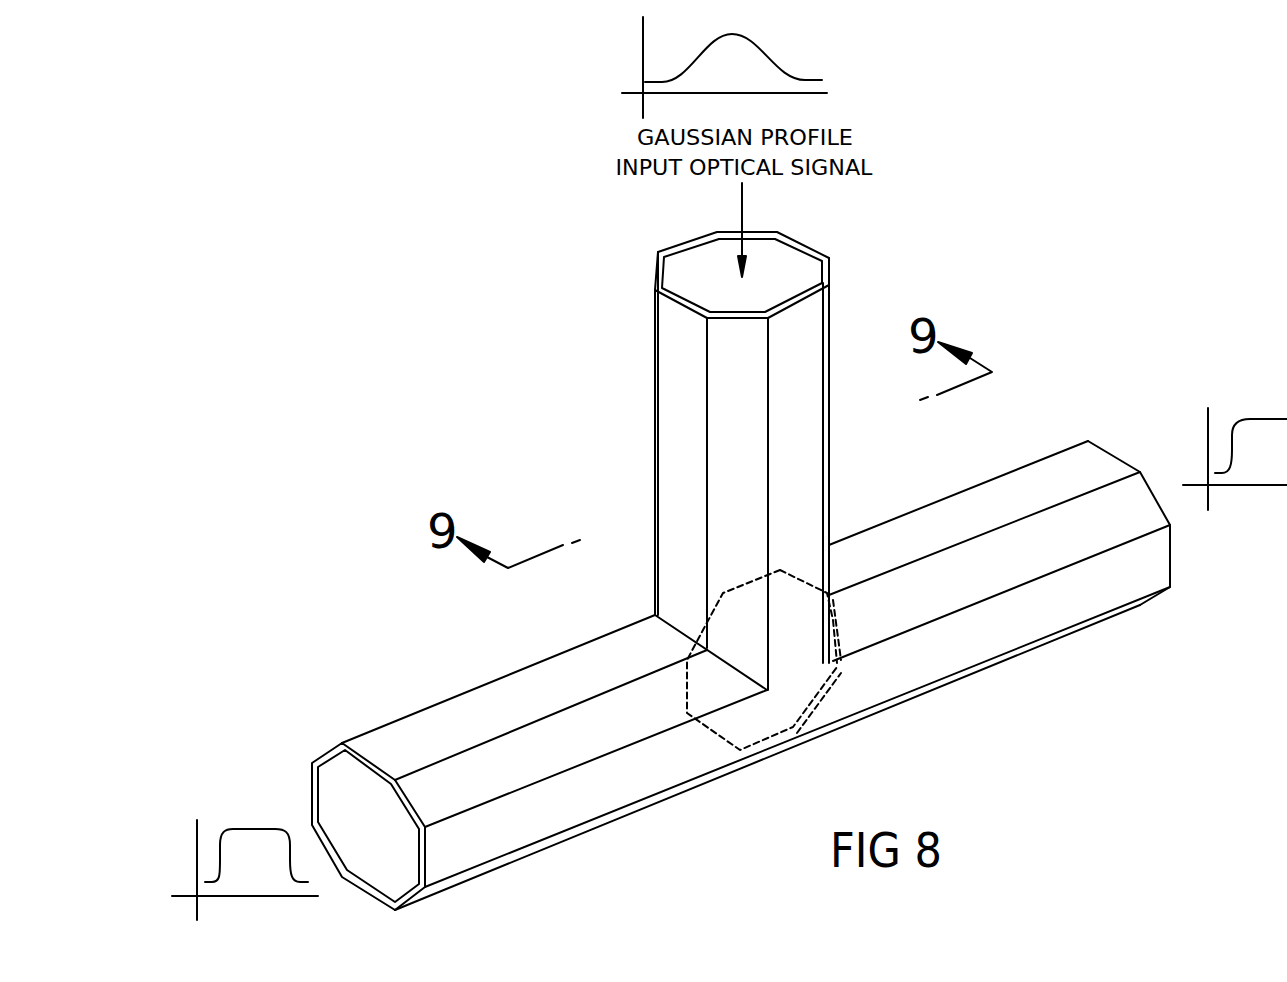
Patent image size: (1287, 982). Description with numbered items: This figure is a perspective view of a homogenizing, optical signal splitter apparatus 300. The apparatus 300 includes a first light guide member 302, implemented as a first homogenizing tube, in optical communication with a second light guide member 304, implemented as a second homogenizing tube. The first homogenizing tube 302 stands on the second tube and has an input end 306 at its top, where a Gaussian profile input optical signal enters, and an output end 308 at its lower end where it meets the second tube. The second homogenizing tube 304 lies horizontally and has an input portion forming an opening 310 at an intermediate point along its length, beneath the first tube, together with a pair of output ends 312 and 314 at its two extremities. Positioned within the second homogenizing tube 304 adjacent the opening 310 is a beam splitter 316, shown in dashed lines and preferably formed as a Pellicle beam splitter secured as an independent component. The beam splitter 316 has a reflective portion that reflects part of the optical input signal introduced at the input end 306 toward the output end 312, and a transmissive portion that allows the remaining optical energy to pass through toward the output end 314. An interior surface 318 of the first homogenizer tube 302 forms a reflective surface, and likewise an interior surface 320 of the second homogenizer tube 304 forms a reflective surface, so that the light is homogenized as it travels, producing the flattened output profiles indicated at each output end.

The homogenizing optical signal splitter apparatus 300 is at (493, 360).
The first light guide member 302 is at (655, 472).
The second light guide member 304 is at (600, 848).
The input end 306 is at (668, 251).
The output end 308 is at (680, 550).
The opening 310 is at (832, 627).
The output end 312 is at (387, 745).
The output end 314 is at (1065, 467).
The beam splitter 316 is at (822, 692).
The interior surface 318 is at (806, 277).
The interior surface 320 is at (340, 783).